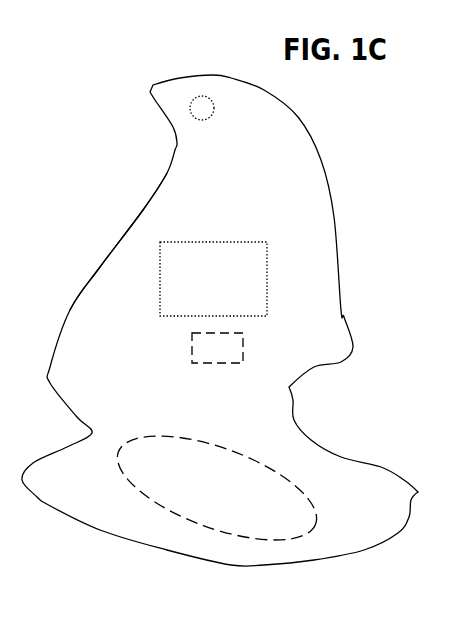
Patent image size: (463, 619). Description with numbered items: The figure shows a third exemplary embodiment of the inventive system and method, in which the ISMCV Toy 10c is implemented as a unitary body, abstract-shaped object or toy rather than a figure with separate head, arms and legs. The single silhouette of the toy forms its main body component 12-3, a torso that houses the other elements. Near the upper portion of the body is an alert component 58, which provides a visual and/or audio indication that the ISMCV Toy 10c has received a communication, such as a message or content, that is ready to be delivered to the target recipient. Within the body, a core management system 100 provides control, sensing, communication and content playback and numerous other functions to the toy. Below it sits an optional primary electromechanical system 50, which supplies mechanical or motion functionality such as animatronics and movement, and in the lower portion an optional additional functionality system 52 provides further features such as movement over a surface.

The ISMCV Toy 10c is at (356, 165).
The main body component 12-3 is at (143, 208).
The alert component 58 is at (202, 96).
The core management system 100 is at (268, 271).
The primary electromechanical system 50 is at (243, 347).
The additional functionality system 52 is at (319, 520).